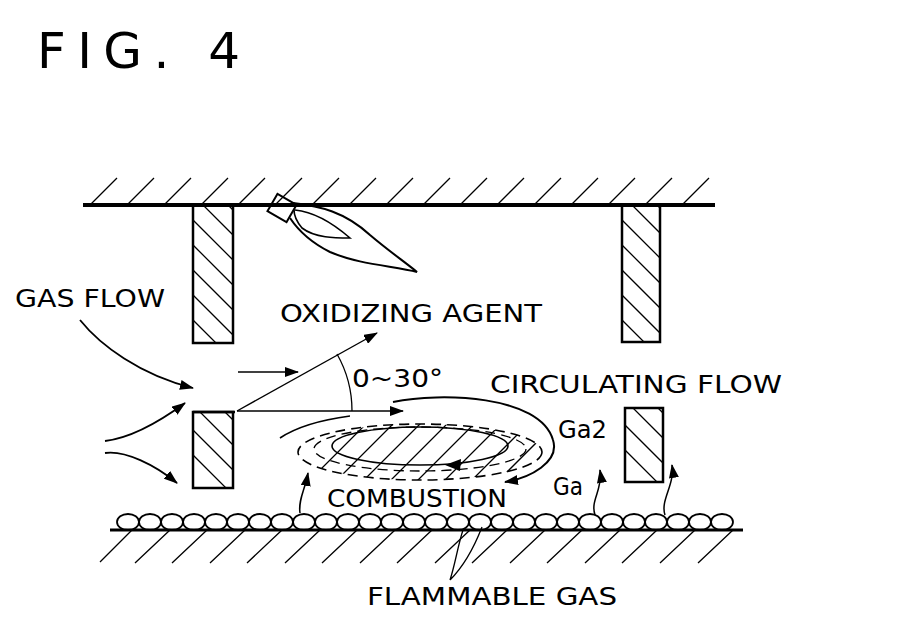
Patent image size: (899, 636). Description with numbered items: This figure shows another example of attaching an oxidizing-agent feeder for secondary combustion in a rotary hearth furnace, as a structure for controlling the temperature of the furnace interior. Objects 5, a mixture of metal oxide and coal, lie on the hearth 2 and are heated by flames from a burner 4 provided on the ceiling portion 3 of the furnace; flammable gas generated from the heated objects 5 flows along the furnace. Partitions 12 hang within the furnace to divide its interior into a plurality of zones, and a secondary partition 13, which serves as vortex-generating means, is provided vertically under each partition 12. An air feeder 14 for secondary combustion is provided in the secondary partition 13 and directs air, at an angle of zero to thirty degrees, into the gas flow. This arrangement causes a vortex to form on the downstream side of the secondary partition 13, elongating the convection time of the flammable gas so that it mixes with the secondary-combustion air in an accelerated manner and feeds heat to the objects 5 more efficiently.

The hearth 2 is at (320, 565).
The ceiling portion 3 is at (535, 172).
The burner 4 is at (283, 198).
The objects 5 is at (703, 530).
The partition 12 is at (215, 215).
The secondary partition 13 is at (655, 435).
The air feeder 14 is at (245, 420).